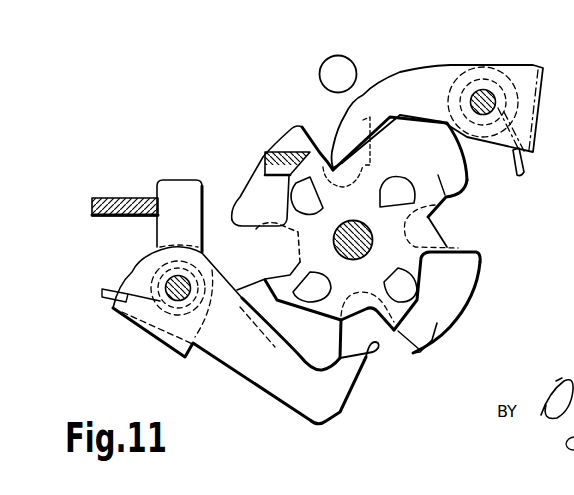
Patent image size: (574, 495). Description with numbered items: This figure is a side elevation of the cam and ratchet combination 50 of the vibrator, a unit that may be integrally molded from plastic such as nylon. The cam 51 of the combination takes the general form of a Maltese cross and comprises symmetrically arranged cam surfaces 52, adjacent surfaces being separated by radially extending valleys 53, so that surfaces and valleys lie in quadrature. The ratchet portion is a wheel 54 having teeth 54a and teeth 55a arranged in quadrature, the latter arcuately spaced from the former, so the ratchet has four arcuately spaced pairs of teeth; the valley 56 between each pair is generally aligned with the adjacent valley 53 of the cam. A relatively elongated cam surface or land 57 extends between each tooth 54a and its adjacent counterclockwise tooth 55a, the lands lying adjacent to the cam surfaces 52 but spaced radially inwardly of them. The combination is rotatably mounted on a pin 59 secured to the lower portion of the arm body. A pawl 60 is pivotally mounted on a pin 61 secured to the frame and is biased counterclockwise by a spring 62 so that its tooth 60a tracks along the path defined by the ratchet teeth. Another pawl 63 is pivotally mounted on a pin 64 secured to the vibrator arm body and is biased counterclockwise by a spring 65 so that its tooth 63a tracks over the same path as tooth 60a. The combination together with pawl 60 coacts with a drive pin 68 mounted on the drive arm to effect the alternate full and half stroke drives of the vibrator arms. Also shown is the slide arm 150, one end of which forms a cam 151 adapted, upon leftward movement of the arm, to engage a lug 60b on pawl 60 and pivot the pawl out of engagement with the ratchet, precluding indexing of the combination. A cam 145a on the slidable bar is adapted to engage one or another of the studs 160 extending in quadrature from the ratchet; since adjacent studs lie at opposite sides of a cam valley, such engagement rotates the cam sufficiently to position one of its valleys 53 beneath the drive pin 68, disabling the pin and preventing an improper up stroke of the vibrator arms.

The cam and ratchet combination 50 is at (483, 285).
The cam 51 is at (440, 332).
The cam surfaces 52 is at (268, 145).
The valleys 53 is at (320, 137).
The ratchet wheel 54 is at (286, 243).
The teeth 54a is at (448, 200).
The teeth 55a is at (448, 247).
The valley 56 is at (432, 222).
The cam surface or land 57 is at (440, 330).
The pin 59 is at (340, 252).
The pawl 60 is at (267, 383).
The tooth 60a is at (377, 350).
The lug 60b is at (184, 197).
The pin 61 is at (172, 280).
The spring 62 is at (108, 296).
The pawl 63 is at (428, 77).
The tooth 63a is at (340, 147).
The pin 64 is at (490, 94).
The spring 65 is at (522, 172).
The drive pin 68 is at (337, 56).
The cam 145a is at (265, 157).
The slide arm 150 is at (90, 208).
The cam 151 is at (125, 212).
The studs 160 is at (400, 188).